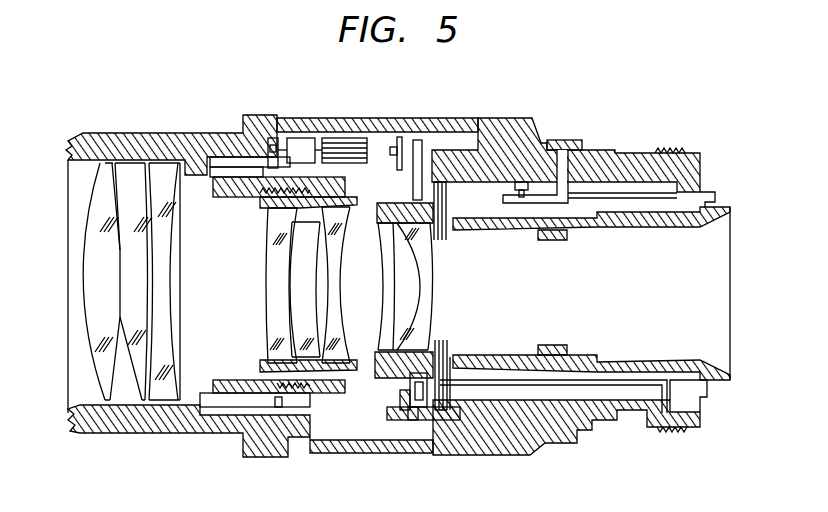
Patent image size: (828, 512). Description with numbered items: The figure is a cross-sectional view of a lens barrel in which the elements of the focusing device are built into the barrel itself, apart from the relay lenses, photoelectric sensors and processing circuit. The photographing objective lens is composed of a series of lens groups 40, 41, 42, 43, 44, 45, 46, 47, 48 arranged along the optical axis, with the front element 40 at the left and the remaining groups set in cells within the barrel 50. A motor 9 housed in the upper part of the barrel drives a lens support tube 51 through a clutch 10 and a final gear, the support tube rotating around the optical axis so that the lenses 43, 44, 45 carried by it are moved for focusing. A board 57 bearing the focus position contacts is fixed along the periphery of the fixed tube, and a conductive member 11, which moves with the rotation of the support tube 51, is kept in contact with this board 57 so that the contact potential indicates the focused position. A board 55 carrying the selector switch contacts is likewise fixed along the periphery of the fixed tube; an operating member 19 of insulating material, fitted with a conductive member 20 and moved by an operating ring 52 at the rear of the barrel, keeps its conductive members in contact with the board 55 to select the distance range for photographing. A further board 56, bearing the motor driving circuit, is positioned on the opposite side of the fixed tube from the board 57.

The motor 9 is at (347, 141).
The clutch 10 is at (308, 137).
The conductive member 11 is at (427, 422).
The operating member 19 is at (582, 172).
The conductive member 20 is at (537, 181).
The lens group 40 is at (107, 377).
The lens group 41 is at (143, 311).
The lens group 42 is at (170, 254).
The lens group 43 is at (273, 235).
The lens group 44 is at (292, 234).
The lens group 45 is at (337, 242).
The lens group 46 is at (386, 318).
The lens group 47 is at (412, 325).
The lens group 48 is at (425, 256).
The front lens barrel 50 is at (221, 135).
The lens support tube 51 is at (289, 392).
The operating ring 52 is at (571, 141).
The board 55 is at (502, 181).
The board 56 is at (400, 398).
The board 57 is at (413, 422).